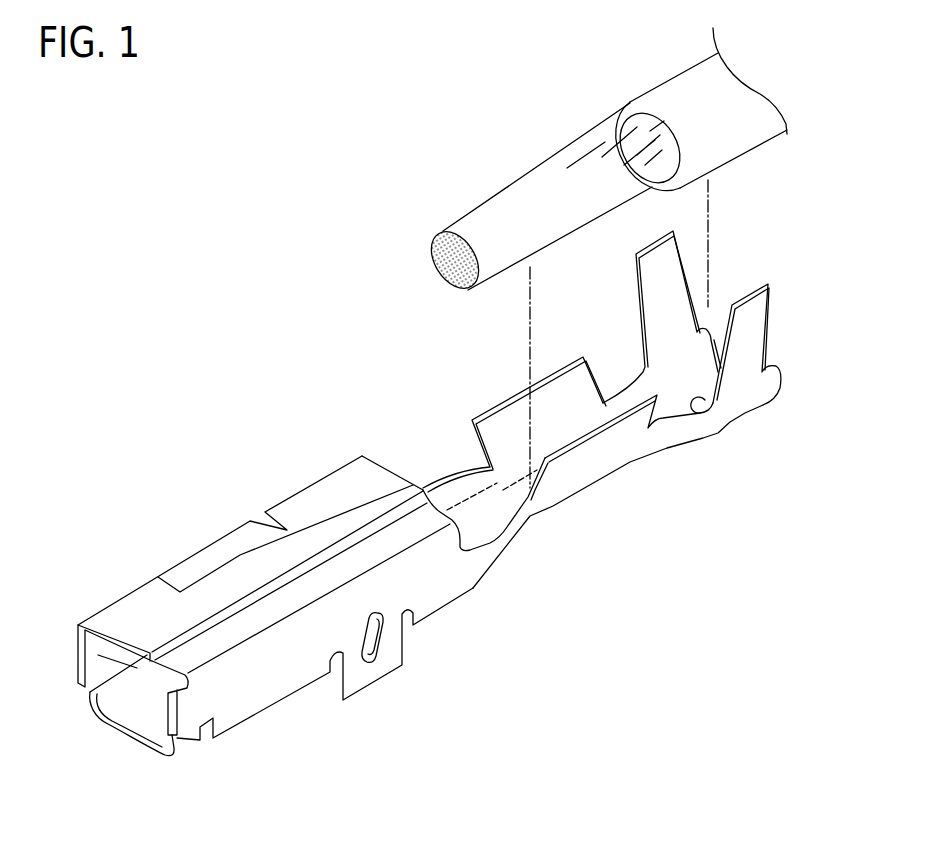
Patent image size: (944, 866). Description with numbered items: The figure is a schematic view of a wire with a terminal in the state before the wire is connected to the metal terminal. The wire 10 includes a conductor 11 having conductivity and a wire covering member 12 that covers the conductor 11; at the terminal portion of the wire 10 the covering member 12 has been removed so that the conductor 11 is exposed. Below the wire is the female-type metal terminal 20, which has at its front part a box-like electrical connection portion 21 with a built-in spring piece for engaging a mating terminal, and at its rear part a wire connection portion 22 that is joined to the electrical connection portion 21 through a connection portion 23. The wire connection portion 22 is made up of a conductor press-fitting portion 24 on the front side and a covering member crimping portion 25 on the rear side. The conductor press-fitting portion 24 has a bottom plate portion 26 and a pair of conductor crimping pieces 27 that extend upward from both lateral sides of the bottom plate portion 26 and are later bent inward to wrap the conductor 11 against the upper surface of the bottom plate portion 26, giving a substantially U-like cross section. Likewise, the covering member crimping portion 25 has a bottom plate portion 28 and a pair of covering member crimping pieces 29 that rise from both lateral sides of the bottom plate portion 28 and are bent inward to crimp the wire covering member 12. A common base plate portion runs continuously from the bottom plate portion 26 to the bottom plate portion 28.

The wire 10 is at (620, 161).
The conductor 11 is at (542, 175).
The wire covering member 12 is at (733, 133).
The metal terminal 20 is at (464, 493).
The electrical connection portion 21 is at (147, 600).
The wire connection portion 22 is at (636, 421).
The connection portion 23 is at (510, 543).
The conductor press-fitting portion 24 is at (501, 392).
The covering member crimping portion 25 is at (633, 271).
The bottom plate portion 26 is at (512, 497).
The conductor crimping pieces 27 is at (603, 447).
The bottom plate portion 28 is at (697, 413).
The covering member crimping pieces 29 is at (760, 303).